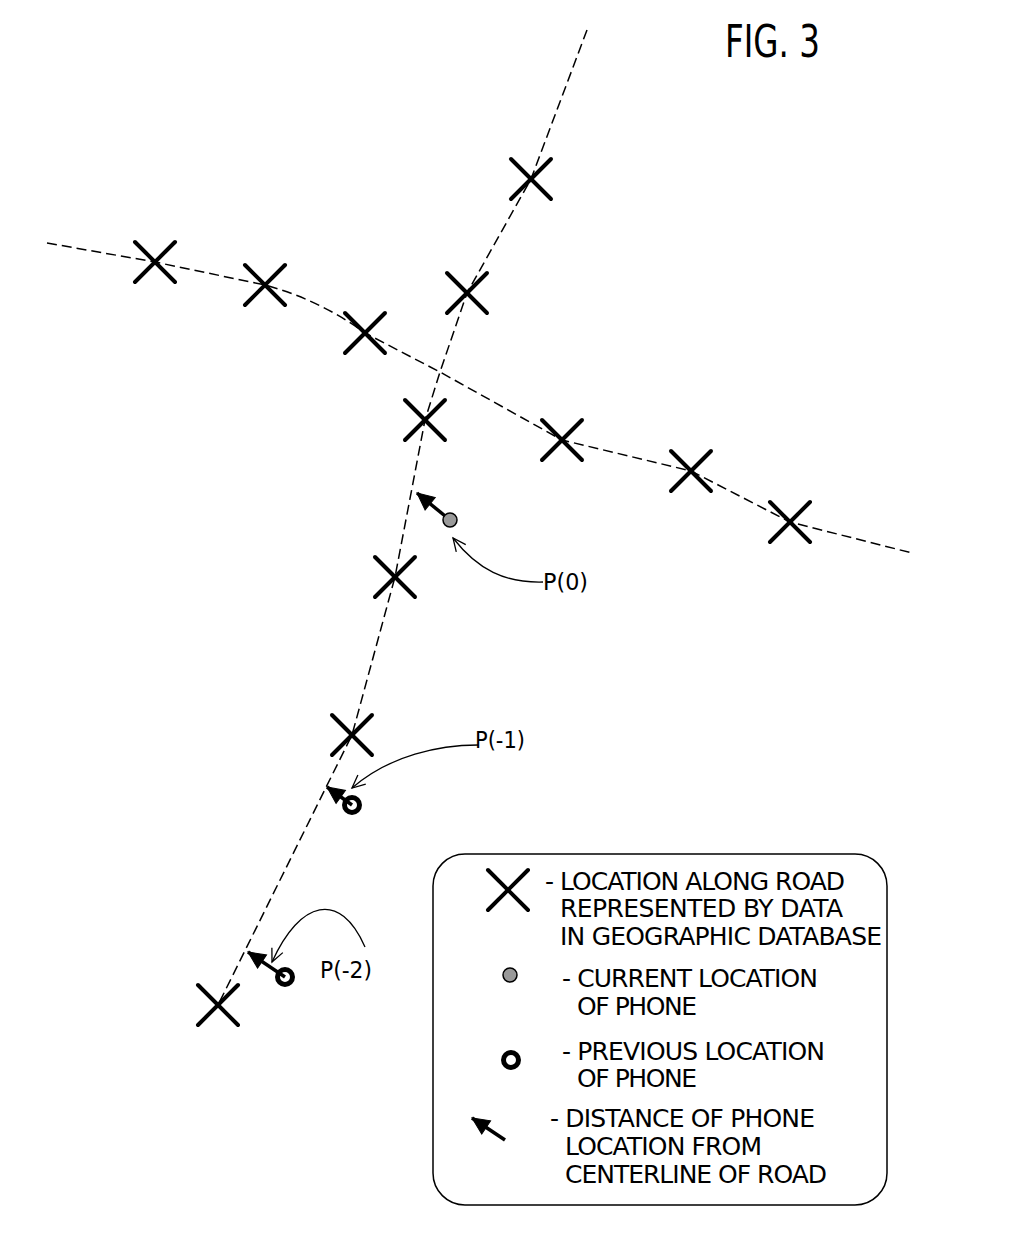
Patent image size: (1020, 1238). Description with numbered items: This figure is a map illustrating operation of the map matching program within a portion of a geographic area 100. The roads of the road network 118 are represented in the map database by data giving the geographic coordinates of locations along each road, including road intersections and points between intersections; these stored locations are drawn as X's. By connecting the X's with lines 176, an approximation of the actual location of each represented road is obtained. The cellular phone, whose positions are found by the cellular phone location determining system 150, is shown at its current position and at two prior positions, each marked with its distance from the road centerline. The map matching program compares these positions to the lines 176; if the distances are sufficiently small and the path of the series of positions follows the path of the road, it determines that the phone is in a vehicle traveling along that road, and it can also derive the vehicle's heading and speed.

The geographic area 100 is at (128, 467).
The road network 118 is at (278, 187).
The cellular phone location determining system 150 is at (380, 715).
The lines 176 is at (377, 647).